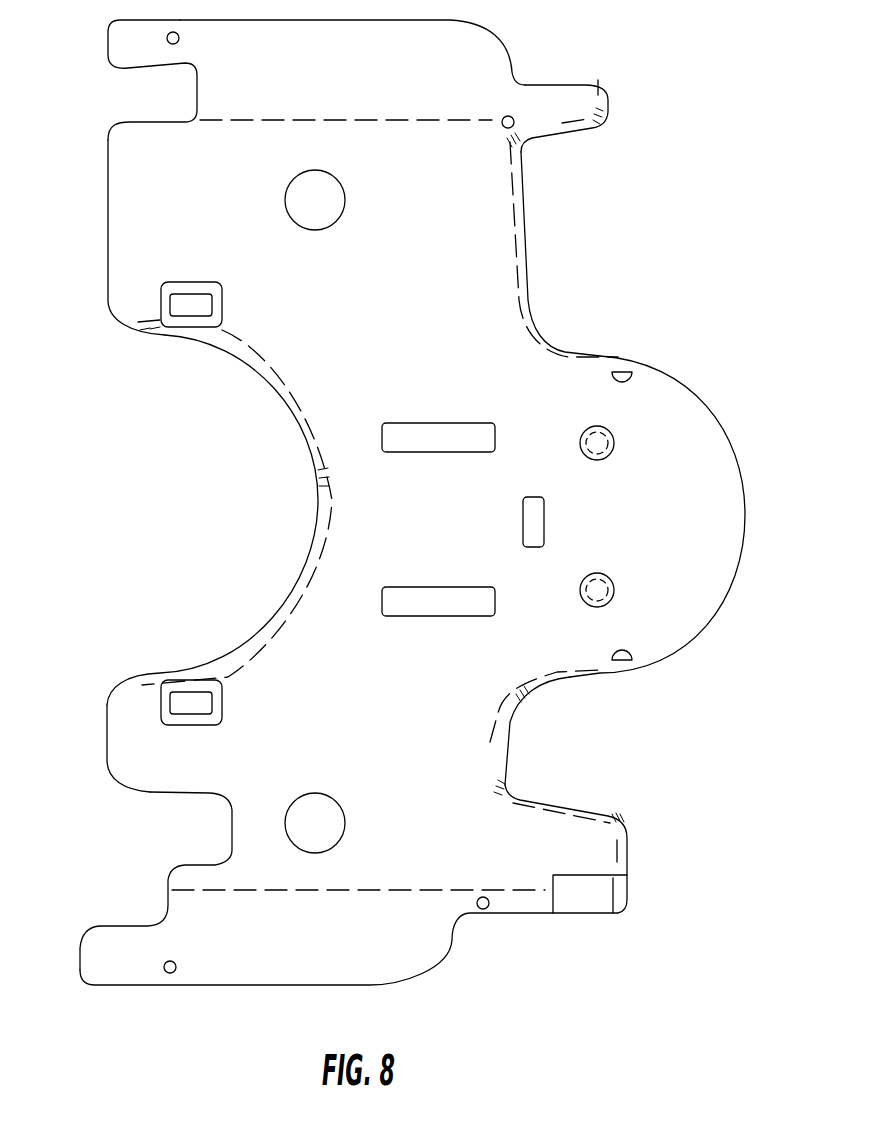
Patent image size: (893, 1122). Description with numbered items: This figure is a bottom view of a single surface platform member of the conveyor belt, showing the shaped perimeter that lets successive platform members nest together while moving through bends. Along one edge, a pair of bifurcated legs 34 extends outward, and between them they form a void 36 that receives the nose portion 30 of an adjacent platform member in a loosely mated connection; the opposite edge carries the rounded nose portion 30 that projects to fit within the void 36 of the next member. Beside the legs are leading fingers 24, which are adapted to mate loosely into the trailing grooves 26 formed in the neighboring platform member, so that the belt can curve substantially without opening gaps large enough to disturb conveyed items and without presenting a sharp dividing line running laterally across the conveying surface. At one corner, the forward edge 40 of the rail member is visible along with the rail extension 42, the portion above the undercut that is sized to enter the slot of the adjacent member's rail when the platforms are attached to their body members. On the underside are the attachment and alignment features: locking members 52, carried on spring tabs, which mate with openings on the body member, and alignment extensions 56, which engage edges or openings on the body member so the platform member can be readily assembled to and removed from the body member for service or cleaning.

The leading fingers 24 is at (610, 97).
The trailing grooves 26 is at (195, 92).
The nose portion 30 is at (706, 504).
The bifurcated legs 34 is at (118, 720).
The void 36 is at (316, 496).
The forward edge 40 is at (625, 898).
The extension 42 is at (583, 900).
The locking members 52 is at (427, 428).
The alignment extensions 56 is at (212, 303).